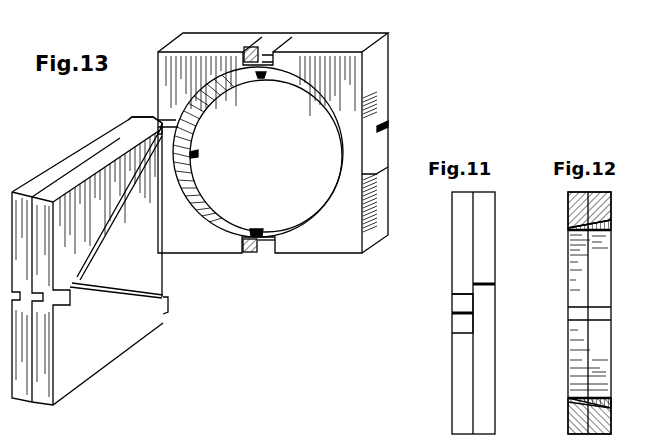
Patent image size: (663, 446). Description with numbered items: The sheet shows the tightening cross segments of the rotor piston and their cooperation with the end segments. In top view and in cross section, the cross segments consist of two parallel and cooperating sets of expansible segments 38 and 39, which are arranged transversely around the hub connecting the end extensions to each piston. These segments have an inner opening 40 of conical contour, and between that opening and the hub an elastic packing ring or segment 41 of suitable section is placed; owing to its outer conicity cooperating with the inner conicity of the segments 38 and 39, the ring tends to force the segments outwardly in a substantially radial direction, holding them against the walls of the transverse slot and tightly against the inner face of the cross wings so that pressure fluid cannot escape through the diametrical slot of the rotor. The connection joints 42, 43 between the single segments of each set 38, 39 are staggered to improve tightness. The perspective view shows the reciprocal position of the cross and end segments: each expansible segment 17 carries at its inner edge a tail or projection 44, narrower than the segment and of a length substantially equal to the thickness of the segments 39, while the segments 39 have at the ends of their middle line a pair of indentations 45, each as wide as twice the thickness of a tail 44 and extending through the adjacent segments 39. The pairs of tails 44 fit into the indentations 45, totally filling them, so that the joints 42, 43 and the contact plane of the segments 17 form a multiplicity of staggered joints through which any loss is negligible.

In FIG. 13, the expansible segment 17 is at (72, 157).
In FIG. 13, the expansible segment 38 is at (377, 107).
In FIG. 11, the expansible segment 38 is at (482, 385).
In FIG. 12, the expansible segment 38 is at (608, 423).
In FIG. 13, the expansible segment 39 is at (370, 153).
In FIG. 11, the expansible segment 39 is at (458, 378).
In FIG. 12, the expansible segment 39 is at (575, 417).
In FIG. 12, the inner opening 40 is at (575, 222).
In FIG. 12, the elastic packing ring 41 is at (605, 229).
In FIG. 13, the connection joint 42 is at (253, 40).
In FIG. 11, the connection joint 42 is at (495, 287).
In FIG. 13, the connection joint 43 is at (190, 124).
In FIG. 11, the connection joint 43 is at (452, 313).
In FIG. 13, the tail 44 is at (133, 122).
In FIG. 13, the indentation 45 is at (265, 62).
In FIG. 11, the indentation 45 is at (452, 294).